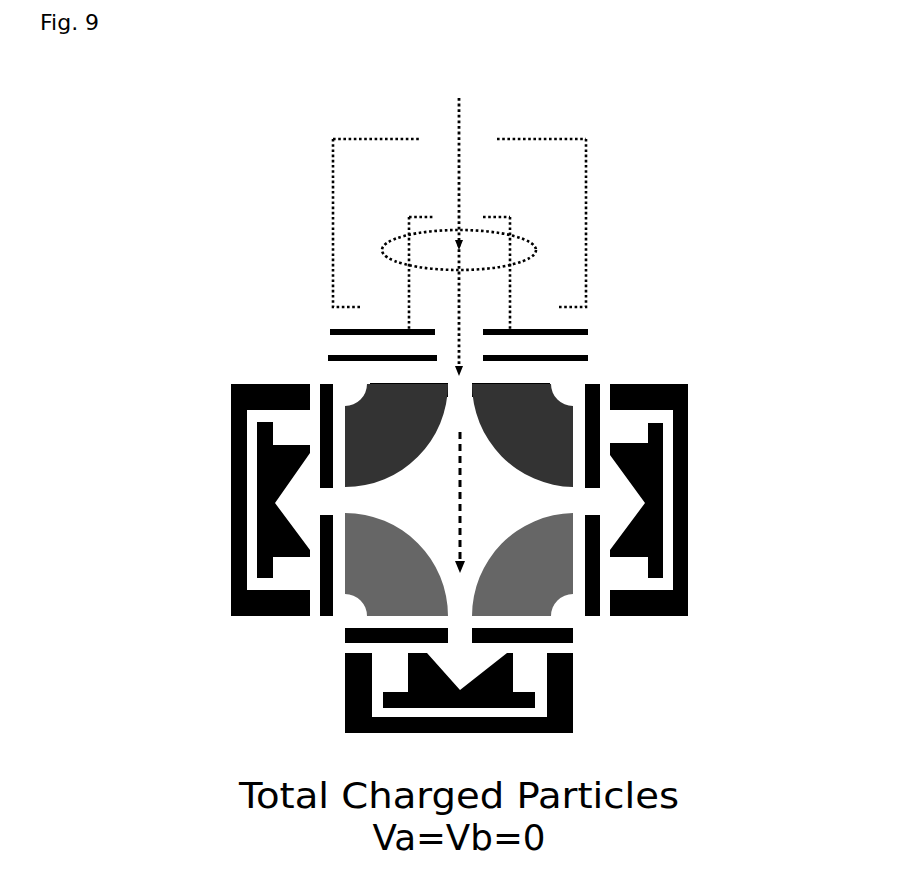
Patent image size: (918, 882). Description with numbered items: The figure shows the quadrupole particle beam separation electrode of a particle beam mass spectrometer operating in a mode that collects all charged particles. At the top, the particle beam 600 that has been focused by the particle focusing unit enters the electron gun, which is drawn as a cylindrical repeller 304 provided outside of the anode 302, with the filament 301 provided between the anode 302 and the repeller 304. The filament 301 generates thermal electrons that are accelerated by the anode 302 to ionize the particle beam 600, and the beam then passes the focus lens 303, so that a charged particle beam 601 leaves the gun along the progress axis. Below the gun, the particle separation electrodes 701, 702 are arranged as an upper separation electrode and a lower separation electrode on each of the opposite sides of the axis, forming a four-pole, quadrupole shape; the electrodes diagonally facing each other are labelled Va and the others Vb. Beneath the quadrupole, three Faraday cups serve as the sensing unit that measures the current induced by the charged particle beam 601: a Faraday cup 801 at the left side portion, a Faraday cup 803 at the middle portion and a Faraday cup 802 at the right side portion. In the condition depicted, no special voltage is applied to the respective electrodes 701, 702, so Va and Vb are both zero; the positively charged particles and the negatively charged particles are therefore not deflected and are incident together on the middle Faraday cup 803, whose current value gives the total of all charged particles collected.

The repeller 304 is at (347, 136).
The particle beam 600 is at (468, 122).
The filament 301 is at (548, 250).
The anode 302 is at (318, 332).
The focus lens 303 is at (318, 358).
The charged particle beam 601 is at (475, 368).
The particle separation electrode 701 is at (559, 385).
The particle separation electrode 702 is at (543, 592).
The Faraday cup 801 is at (223, 480).
The Faraday cup 802 is at (699, 528).
The Faraday cup 803 is at (335, 722).